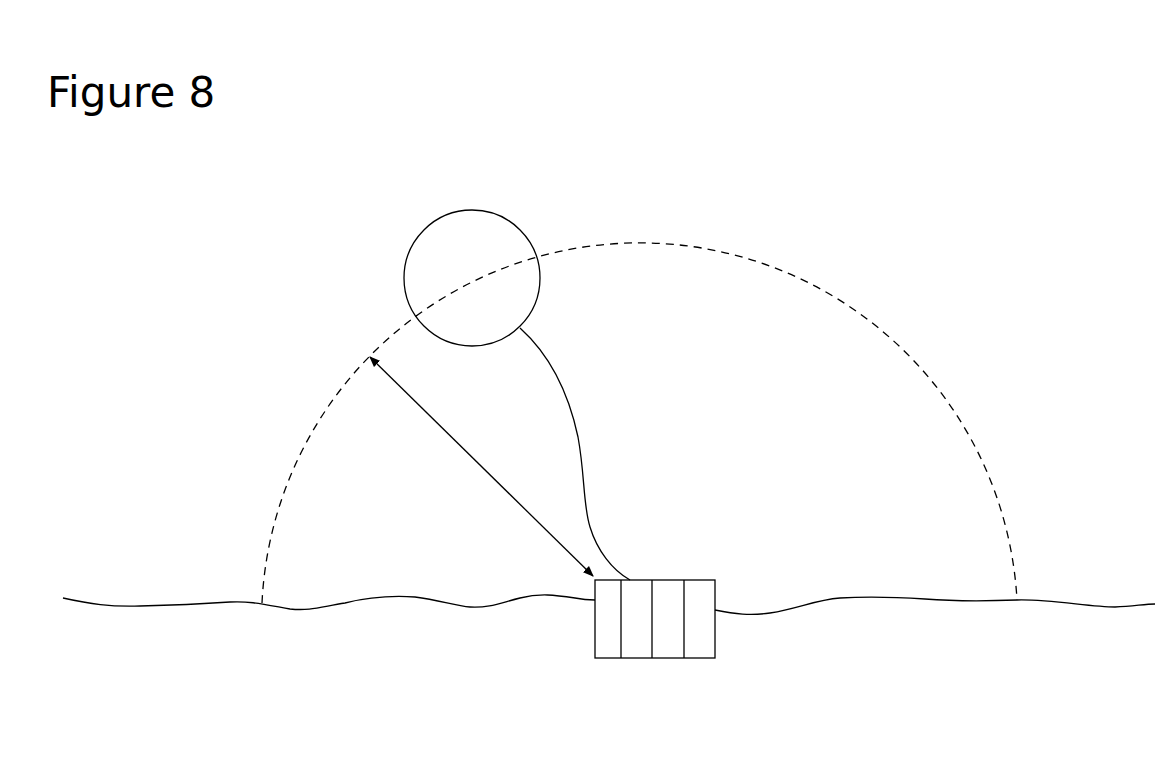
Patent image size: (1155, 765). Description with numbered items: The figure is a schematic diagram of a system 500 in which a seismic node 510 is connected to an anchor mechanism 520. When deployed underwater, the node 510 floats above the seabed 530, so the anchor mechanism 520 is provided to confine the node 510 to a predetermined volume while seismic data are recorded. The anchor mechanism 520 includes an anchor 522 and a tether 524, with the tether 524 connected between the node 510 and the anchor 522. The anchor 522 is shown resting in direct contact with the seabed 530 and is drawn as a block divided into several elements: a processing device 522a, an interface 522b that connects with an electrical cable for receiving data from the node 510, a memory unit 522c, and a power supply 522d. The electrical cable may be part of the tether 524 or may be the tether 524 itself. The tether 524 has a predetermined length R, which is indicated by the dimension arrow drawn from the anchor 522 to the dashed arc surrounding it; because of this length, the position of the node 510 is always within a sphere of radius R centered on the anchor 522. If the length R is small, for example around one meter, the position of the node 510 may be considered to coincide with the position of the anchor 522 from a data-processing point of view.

The system 500 is at (638, 110).
The node 510 is at (408, 258).
The anchor mechanism 520 is at (669, 520).
The anchor 522 is at (661, 665).
The processing device 522a is at (604, 645).
The interface 522b is at (632, 645).
The memory unit 522c is at (668, 645).
The power supply 522d is at (700, 645).
The tether 524 is at (576, 437).
The seabed 530 is at (140, 607).
The predetermined length R is at (481, 466).